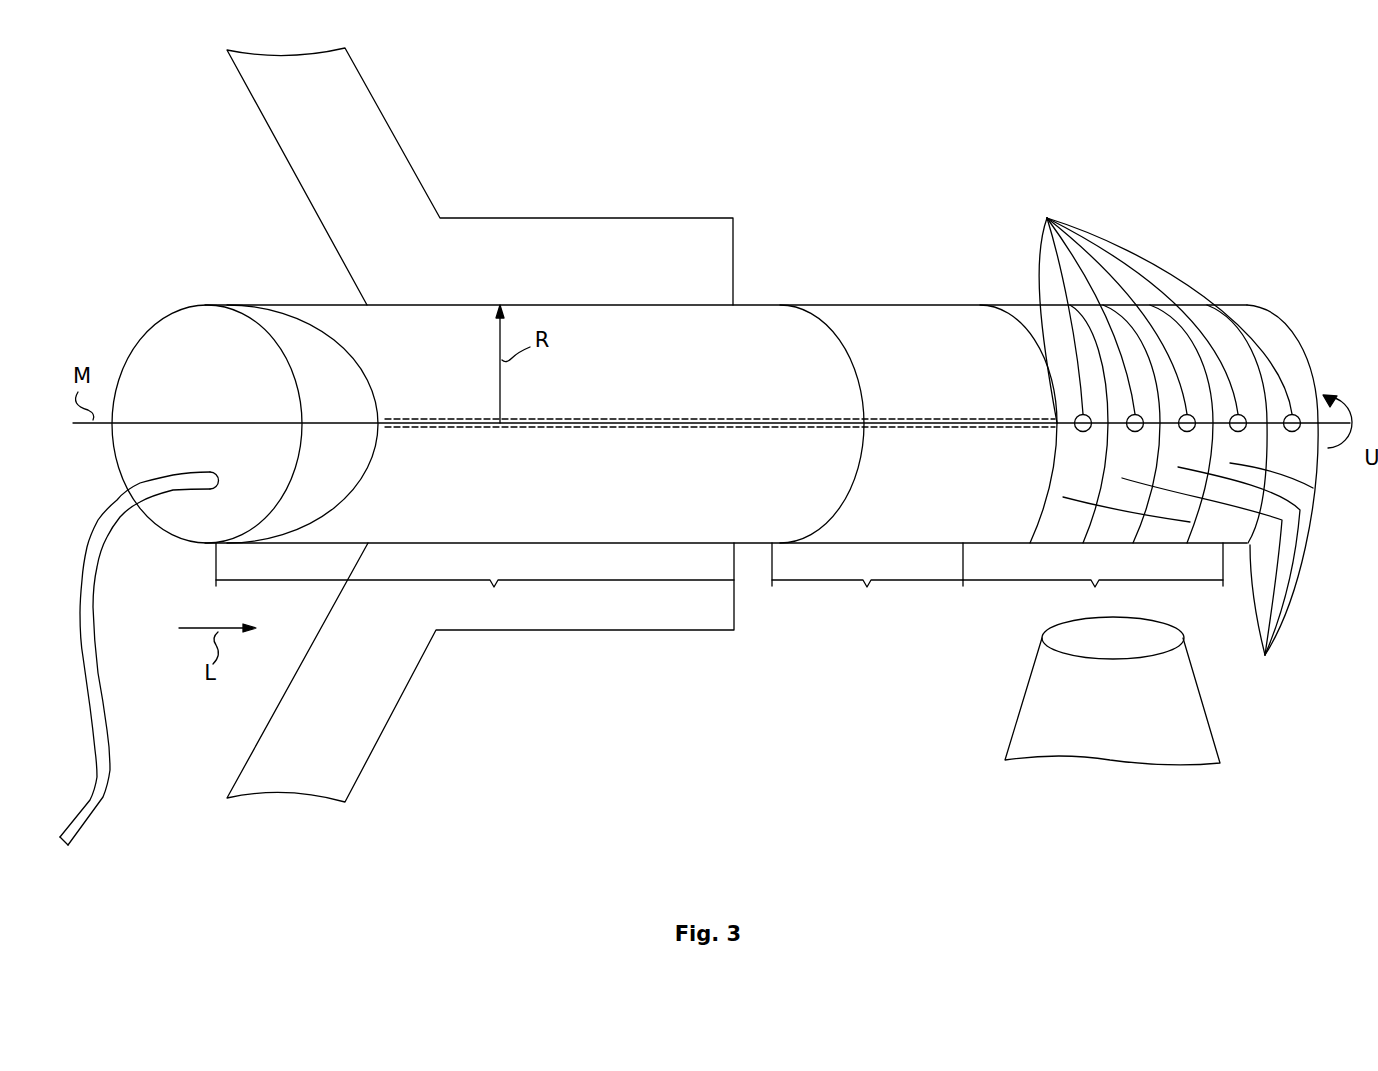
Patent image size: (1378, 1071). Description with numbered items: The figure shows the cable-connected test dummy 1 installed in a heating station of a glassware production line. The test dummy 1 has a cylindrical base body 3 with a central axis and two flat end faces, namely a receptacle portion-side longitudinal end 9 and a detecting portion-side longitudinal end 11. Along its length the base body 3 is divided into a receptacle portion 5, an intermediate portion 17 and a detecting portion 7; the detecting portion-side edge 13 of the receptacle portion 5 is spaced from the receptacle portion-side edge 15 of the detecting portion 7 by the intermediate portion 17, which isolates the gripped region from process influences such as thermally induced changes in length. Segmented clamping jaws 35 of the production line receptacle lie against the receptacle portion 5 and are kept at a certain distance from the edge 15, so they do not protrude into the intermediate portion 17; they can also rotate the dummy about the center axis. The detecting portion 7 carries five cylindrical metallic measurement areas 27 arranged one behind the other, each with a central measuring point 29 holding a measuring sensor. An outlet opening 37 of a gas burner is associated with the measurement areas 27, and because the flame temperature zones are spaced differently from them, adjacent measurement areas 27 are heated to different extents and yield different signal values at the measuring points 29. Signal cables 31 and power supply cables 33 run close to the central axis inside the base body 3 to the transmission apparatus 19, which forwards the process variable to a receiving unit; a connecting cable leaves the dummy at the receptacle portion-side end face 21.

The test dummy 1 is at (845, 172).
The base body 3 is at (452, 304).
The receptacle portion 5 is at (475, 580).
The detecting portion 7 is at (1093, 579).
The receptacle portion-side longitudinal end 9 is at (207, 545).
The detecting portion-side longitudinal end 11 is at (1285, 313).
The detecting portion-side edge of the receptacle portion 13 is at (830, 332).
The receptacle portion-side edge of the detecting portion 15 is at (1010, 313).
The intermediate portion 17 is at (867, 579).
The transmission apparatus 19 is at (275, 304).
The receptacle portion-side end face 21 is at (148, 327).
The measurement areas 27 is at (1188, 573).
The measuring points 29 is at (1163, 306).
The signal cables 31 is at (635, 417).
The power supply cables 33 is at (682, 417).
The clamping jaws 35 is at (517, 240).
The outlet opening 37 is at (1040, 636).